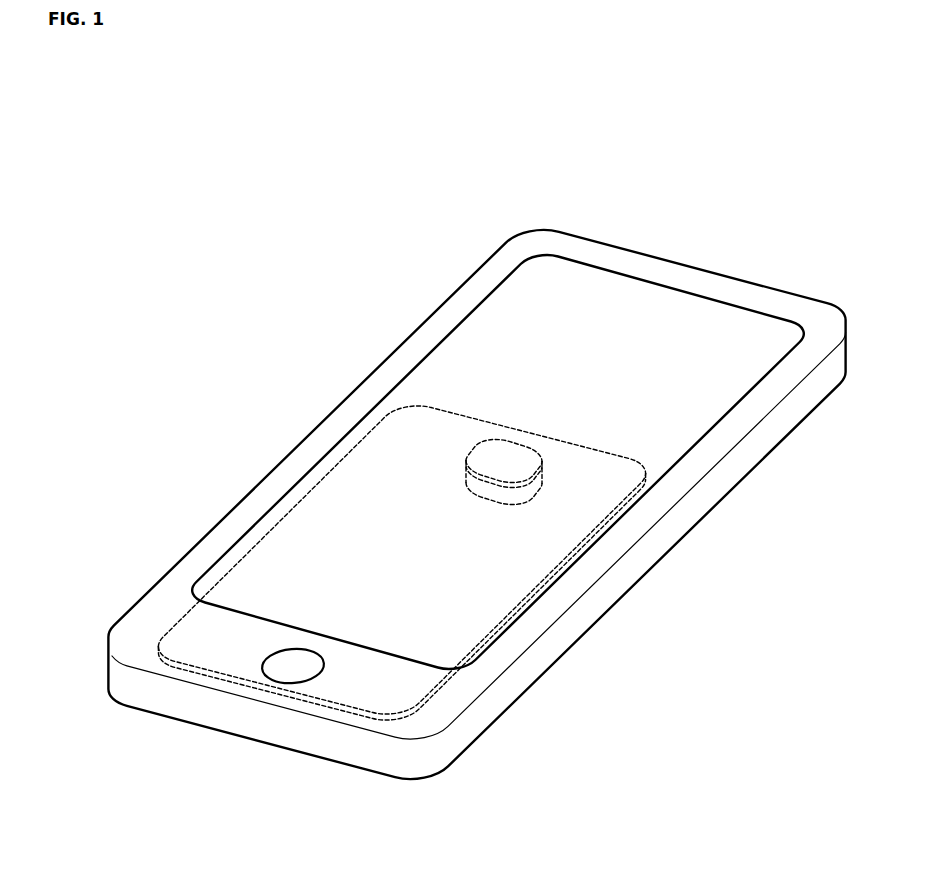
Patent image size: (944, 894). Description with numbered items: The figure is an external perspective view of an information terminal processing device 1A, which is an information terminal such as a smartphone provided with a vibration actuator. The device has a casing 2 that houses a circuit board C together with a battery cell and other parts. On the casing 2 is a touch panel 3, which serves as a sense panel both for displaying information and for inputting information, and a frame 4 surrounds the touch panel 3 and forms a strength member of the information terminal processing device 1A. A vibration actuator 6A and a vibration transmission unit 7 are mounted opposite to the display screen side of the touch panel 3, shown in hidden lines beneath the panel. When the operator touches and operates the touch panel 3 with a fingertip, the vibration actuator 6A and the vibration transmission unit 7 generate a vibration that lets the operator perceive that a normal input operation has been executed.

The information terminal processing device 1A is at (746, 156).
The casing 2 is at (400, 335).
The touch panel 3 is at (722, 325).
The frame 4 is at (763, 458).
The vibration actuator 6A is at (460, 491).
The vibration transmission unit 7 is at (517, 440).
The circuit board C is at (178, 614).